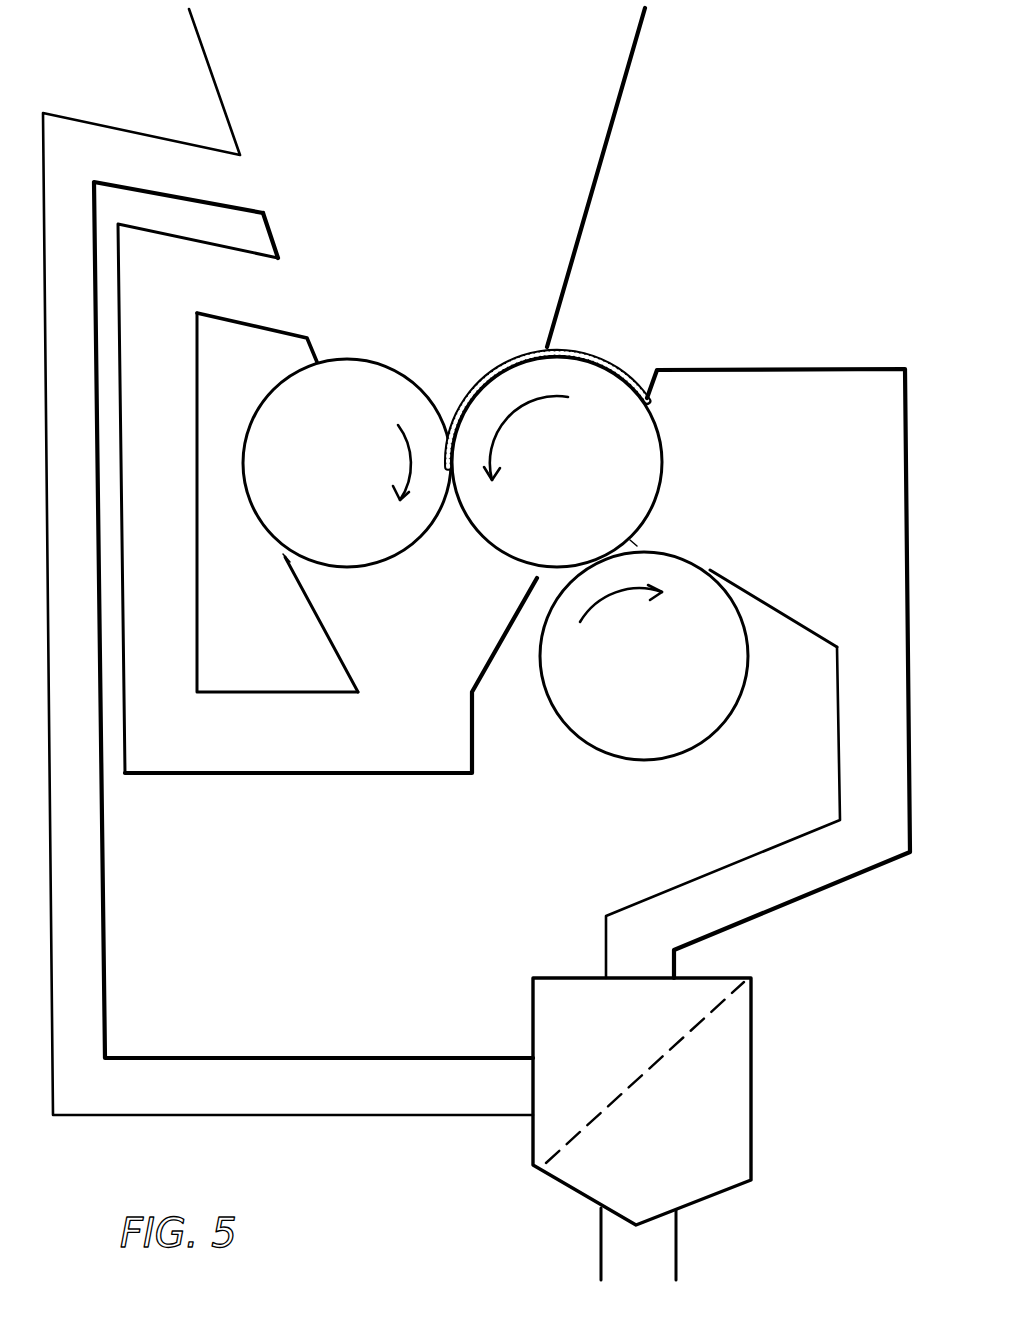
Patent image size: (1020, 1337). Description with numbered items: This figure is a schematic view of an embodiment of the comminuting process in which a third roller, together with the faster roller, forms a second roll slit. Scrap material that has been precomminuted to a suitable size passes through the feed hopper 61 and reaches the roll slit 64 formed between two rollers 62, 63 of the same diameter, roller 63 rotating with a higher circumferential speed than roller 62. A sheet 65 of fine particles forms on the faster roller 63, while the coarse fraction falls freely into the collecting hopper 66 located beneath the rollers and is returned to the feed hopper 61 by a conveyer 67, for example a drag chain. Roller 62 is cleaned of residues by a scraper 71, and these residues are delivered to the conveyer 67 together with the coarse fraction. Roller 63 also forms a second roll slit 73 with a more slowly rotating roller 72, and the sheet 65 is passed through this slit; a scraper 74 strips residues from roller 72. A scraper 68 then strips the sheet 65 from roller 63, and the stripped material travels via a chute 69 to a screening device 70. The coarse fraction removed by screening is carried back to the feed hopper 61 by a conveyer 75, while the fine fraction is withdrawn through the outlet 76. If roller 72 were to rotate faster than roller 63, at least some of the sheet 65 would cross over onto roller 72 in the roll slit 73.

The feed hopper 61 is at (580, 143).
The roller 62 is at (297, 392).
The roller 63 is at (590, 377).
The roll slit 64 is at (451, 430).
The sheet 65 is at (472, 533).
The collecting hopper 66 is at (395, 688).
The conveyer 67 is at (183, 507).
The scraper 68 is at (657, 385).
The chute 69 is at (857, 673).
The screening device 70 is at (732, 1038).
The scraper 71 is at (298, 568).
The roller 72 is at (600, 718).
The roll slit 73 is at (633, 542).
The scraper 74 is at (773, 605).
The conveyer 75 is at (95, 880).
The outlet 76 is at (623, 1242).